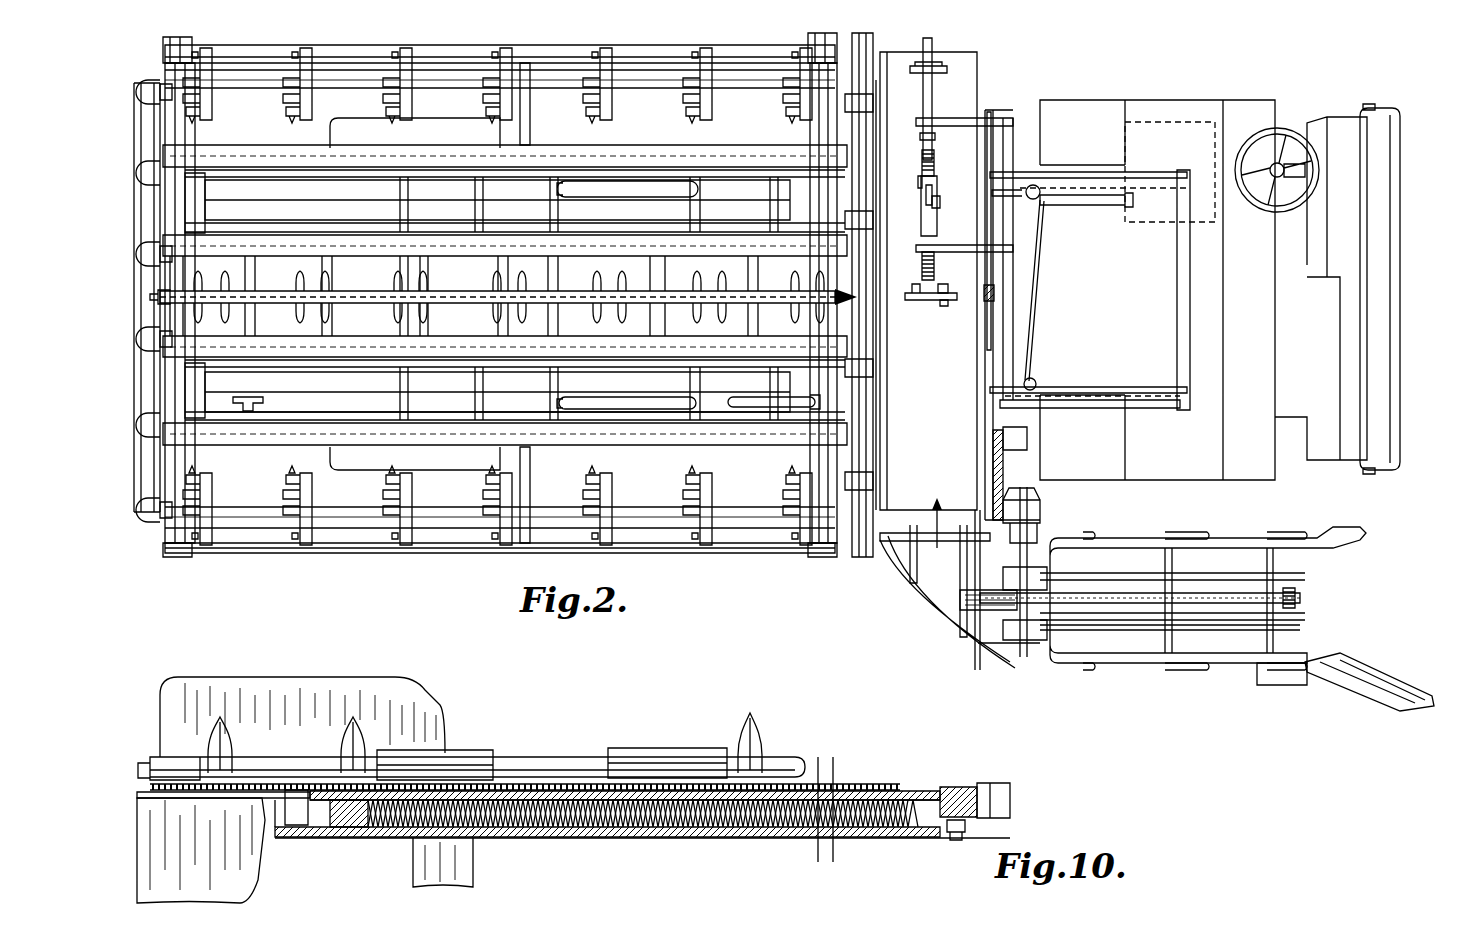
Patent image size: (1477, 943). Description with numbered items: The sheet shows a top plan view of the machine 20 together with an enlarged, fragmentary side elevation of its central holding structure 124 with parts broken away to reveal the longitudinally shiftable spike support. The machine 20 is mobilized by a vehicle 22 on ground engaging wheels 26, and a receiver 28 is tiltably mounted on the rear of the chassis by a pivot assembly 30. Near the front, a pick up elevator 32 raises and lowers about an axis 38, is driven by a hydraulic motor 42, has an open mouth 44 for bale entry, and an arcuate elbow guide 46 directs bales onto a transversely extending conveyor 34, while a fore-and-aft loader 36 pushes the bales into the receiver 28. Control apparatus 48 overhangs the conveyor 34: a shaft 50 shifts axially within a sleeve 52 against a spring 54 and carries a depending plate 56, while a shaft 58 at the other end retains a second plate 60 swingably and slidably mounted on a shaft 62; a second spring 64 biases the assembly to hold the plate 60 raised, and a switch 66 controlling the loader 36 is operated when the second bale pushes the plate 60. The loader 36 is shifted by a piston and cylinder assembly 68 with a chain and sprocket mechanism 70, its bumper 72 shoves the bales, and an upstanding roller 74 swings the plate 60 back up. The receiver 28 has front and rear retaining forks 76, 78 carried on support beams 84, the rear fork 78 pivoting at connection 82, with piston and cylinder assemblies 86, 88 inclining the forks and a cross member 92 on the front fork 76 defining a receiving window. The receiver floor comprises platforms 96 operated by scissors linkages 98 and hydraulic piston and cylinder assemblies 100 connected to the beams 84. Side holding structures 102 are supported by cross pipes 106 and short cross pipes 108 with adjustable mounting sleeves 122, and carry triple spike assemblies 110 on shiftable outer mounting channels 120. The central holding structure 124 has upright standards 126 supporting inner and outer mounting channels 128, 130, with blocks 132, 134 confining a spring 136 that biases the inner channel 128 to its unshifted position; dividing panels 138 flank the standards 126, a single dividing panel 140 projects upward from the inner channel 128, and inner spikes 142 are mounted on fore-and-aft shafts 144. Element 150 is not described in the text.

In FIG. 2, the machine 20 is at (987, 342).
In FIG. 2, the vehicle 22 is at (172, 92).
In FIG. 2, the ground engaging wheels 26 is at (364, 124).
In FIG. 2, the receiver 28 is at (712, 45).
In FIG. 2, the pivot assembly 30 is at (246, 398).
In FIG. 2, the pick up elevator 32 is at (1203, 528).
In FIG. 2, the conveyor 34 is at (940, 534).
In FIG. 2, the loader 36 is at (1199, 303).
In FIG. 2, the axis 38 is at (1030, 521).
In FIG. 2, the hydraulic motor 42 is at (1030, 441).
In FIG. 2, the mouth 44 is at (1342, 660).
In FIG. 2, the elbow guide 46 is at (915, 616).
In FIG. 2, the control apparatus 48 is at (933, 153).
In FIG. 2, the shaft 50 is at (931, 42).
In FIG. 2, the sleeve 52 is at (933, 212).
In FIG. 2, the spring 54 is at (924, 160).
In FIG. 2, the depending plate 56 is at (924, 62).
In FIG. 2, the shaft 58 is at (925, 275).
In FIG. 2, the second plate 60 is at (915, 300).
In FIG. 2, the shaft 62 is at (950, 300).
In FIG. 2, the second spring 64 is at (918, 250).
In FIG. 2, the switch 66 is at (938, 200).
In FIG. 2, the piston and cylinder assembly 68 is at (1125, 206).
In FIG. 2, the chain and sprocket mechanism 70 is at (1036, 252).
In FIG. 2, the bumper 72 is at (985, 375).
In FIG. 2, the roller 74 is at (995, 298).
In FIG. 2, the front retaining fork 76 is at (878, 368).
In FIG. 2, the rear retaining fork 78 is at (133, 250).
In FIG. 2, the rotatable connection 82 is at (140, 510).
In FIG. 2, the support beams 84 is at (798, 212).
In FIG. 2, the piston and cylinder assembly 86 is at (762, 408).
In FIG. 2, the piston and cylinder assembly 88 is at (158, 297).
In FIG. 2, the cross member 92 is at (868, 445).
In FIG. 2, the platform 96 is at (712, 150).
In FIG. 2, the scissors linkage 98 is at (597, 232).
In FIG. 2, the hydraulic piston and cylinder assembly 100 is at (612, 192).
In FIG. 2, the holding structures 102 is at (352, 47).
In FIG. 2, the cross pipes 106 is at (190, 138).
In FIG. 2, the short cross pipes 108 is at (531, 146).
In FIG. 2, the triple spike assemblies 110 is at (609, 104).
In FIG. 2, the outer mounting channel 120 is at (578, 42).
In FIG. 2, the mounting sleeves 122 is at (524, 502).
In FIG. 2, the central holding structure 124 is at (414, 281).
In FIG. 10, the central holding structure 124 is at (637, 748).
In FIG. 10, the upright standards 126 is at (475, 866).
In FIG. 10, the inner mounting channel 128 is at (293, 790).
In FIG. 10, the outer mounting channel 130 is at (271, 832).
In FIG. 10, the block 132 is at (362, 830).
In FIG. 10, the block 134 is at (961, 790).
In FIG. 10, the spring 136 is at (608, 832).
In FIG. 10, the dividing panels 138 is at (236, 893).
In FIG. 10, the dividing panel 140 is at (250, 700).
In FIG. 10, the inner spikes 142 is at (761, 730).
In FIG. 10, the shafts 144 is at (526, 760).
In FIG. 2, the clamp 150 is at (158, 345).